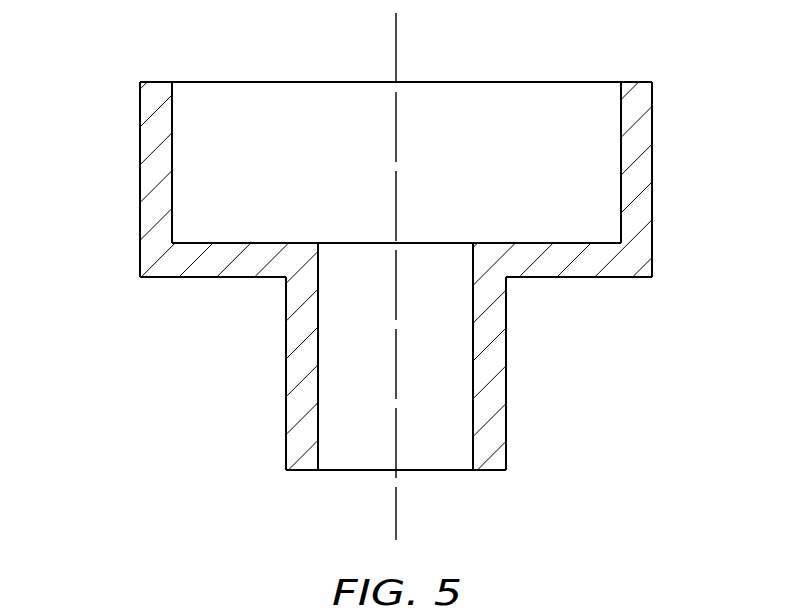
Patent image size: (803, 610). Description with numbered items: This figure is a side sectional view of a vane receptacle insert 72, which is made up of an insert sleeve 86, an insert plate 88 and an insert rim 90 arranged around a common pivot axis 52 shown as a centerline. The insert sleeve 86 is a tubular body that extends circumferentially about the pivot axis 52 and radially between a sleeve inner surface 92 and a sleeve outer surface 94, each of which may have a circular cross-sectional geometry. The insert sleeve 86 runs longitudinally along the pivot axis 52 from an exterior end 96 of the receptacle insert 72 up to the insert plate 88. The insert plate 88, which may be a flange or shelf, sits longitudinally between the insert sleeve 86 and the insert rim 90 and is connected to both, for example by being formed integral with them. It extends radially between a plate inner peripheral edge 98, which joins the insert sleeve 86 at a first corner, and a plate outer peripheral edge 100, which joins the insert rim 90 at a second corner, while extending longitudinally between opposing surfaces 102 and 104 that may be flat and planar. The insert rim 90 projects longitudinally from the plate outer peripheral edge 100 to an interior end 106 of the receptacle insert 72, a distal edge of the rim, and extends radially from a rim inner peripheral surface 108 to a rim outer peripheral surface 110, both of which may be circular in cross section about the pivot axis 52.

The pivot axis 52 is at (397, 32).
The receptacle insert 72 is at (401, 275).
The insert sleeve 86 is at (454, 356).
The insert plate 88 is at (210, 279).
The insert rim 90 is at (654, 168).
The sleeve inner surface 92 is at (472, 452).
The sleeve outer surface 94 is at (507, 438).
The exterior end 96 is at (299, 471).
The plate inner peripheral edge 98 is at (318, 243).
The plate outer peripheral edge 100 is at (140, 278).
The plate surface 102 is at (563, 278).
The plate surface 104 is at (560, 243).
The interior end 106 is at (153, 81).
The rim inner peripheral surface 108 is at (172, 137).
The rim outer peripheral surface 110 is at (140, 143).